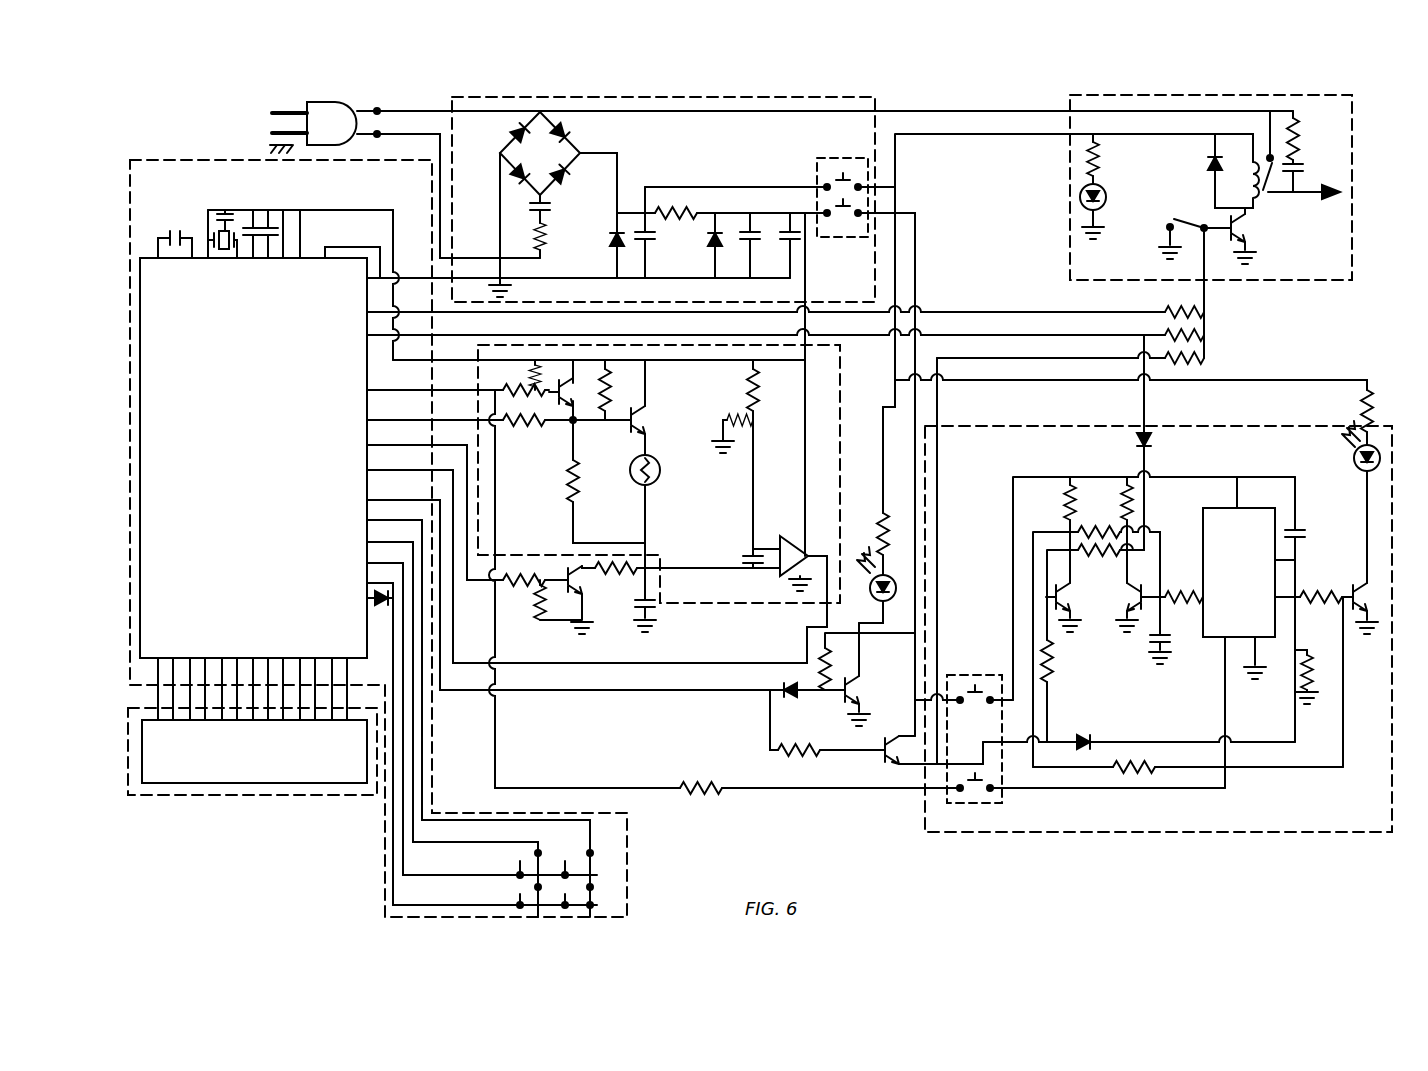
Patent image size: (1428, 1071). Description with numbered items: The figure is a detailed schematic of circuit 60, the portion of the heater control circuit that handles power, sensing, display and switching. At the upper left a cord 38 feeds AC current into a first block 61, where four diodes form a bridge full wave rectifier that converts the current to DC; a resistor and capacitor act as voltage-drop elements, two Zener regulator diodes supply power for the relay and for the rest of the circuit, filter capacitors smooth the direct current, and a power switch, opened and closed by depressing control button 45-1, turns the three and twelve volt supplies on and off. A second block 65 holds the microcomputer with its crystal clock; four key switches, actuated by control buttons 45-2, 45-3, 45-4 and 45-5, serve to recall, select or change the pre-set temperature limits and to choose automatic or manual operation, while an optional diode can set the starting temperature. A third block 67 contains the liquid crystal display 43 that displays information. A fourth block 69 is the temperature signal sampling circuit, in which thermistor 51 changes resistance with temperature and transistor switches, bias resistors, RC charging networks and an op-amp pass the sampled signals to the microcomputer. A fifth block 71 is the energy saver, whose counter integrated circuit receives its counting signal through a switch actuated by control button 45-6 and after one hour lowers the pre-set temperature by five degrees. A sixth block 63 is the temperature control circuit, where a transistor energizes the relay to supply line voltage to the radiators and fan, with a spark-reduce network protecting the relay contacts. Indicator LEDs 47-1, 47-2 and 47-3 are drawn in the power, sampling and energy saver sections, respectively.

The cord 38 is at (308, 103).
The LCD 43 is at (321, 764).
The control button 45-1 is at (837, 175).
The control button 45-2 is at (618, 892).
The control button 45-3 is at (618, 860).
The control button 45-4 is at (468, 892).
The control button 45-5 is at (468, 860).
The control button 45-6 is at (973, 710).
The indicator LED 47-1 is at (1114, 192).
The indicator LED 47-2 is at (861, 585).
The indicator LED 47-3 is at (1336, 446).
The thermistor 51 is at (679, 472).
The circuit 60 is at (899, 852).
The first block 61 is at (877, 96).
The sixth block 63 is at (1068, 96).
The second block 65 is at (218, 159).
The third block 67 is at (268, 797).
The fourth block 69 is at (710, 605).
The fifth block 71 is at (1212, 833).